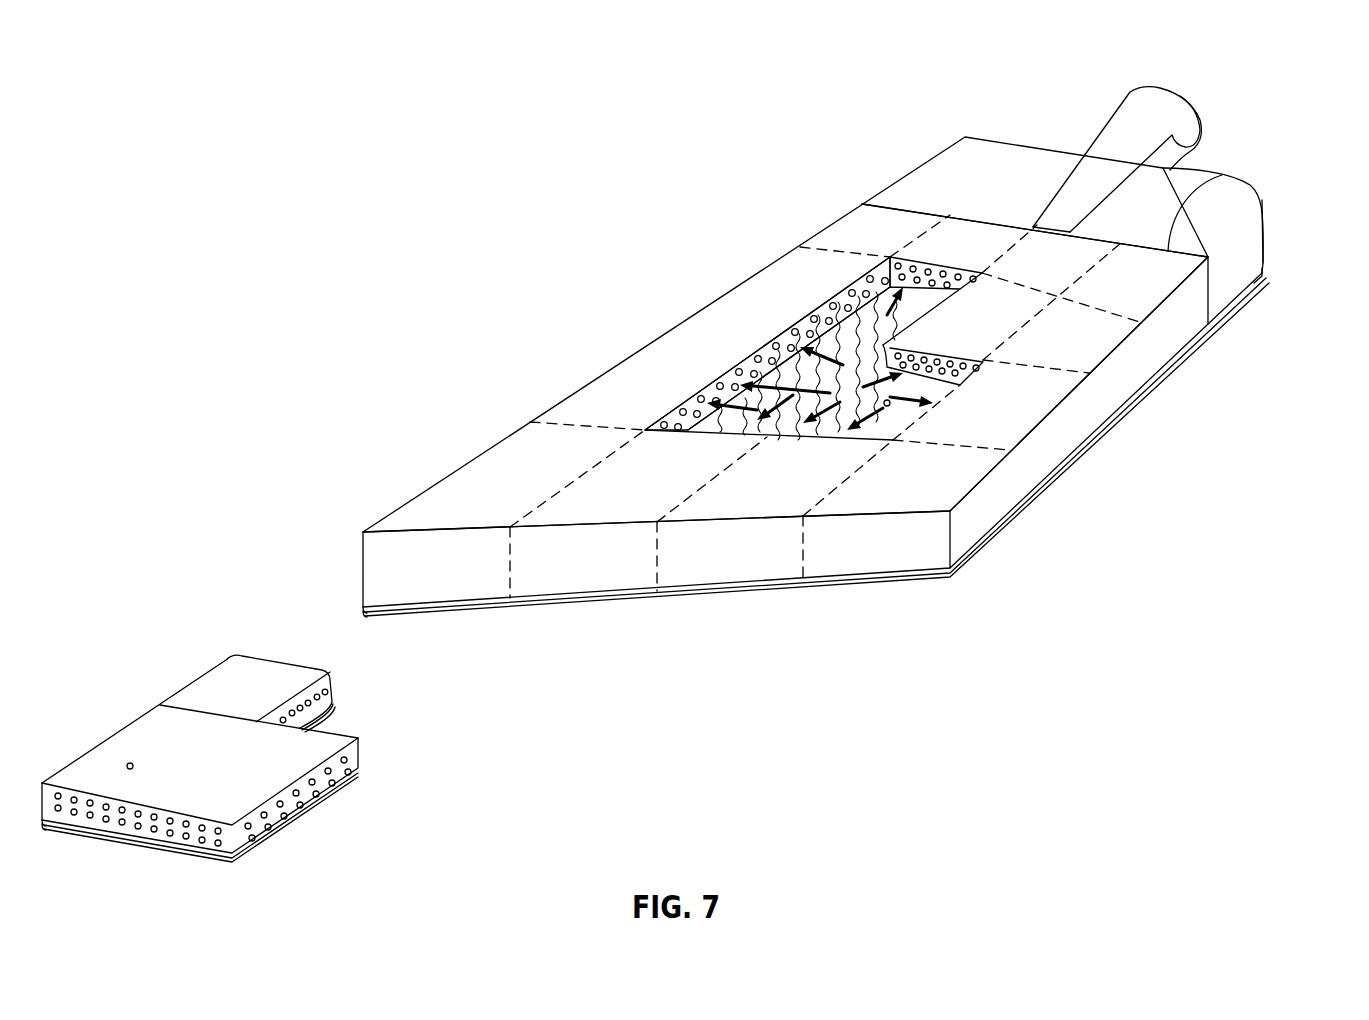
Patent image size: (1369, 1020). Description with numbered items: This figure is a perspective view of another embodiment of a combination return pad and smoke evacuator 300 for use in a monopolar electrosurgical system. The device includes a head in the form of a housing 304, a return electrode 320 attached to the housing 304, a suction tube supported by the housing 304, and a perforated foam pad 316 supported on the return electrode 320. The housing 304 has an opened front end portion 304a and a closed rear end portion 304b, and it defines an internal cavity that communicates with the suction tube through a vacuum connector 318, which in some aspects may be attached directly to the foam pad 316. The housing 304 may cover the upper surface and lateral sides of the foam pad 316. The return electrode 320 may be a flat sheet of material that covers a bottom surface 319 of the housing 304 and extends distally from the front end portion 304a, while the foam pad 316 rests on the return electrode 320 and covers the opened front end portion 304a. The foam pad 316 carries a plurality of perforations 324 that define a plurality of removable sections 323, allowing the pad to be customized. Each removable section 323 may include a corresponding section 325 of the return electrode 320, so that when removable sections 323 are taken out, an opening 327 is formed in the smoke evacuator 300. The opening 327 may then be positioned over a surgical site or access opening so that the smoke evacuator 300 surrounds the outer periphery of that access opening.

The combination return pad and smoke evacuator 300 is at (230, 155).
The housing 304 is at (975, 125).
The opened front end portion 304a is at (1213, 173).
The closed rear end portion 304b is at (1262, 205).
The perforated foam pad 316 is at (1178, 330).
The vacuum connector 318 is at (1147, 98).
The bottom surface 319 is at (1262, 273).
The return electrode 320 is at (1022, 536).
The removable sections 323 is at (195, 730).
The perforations 324 is at (900, 250).
The section of the return electrode 325 is at (350, 783).
The opening 327 is at (772, 356).